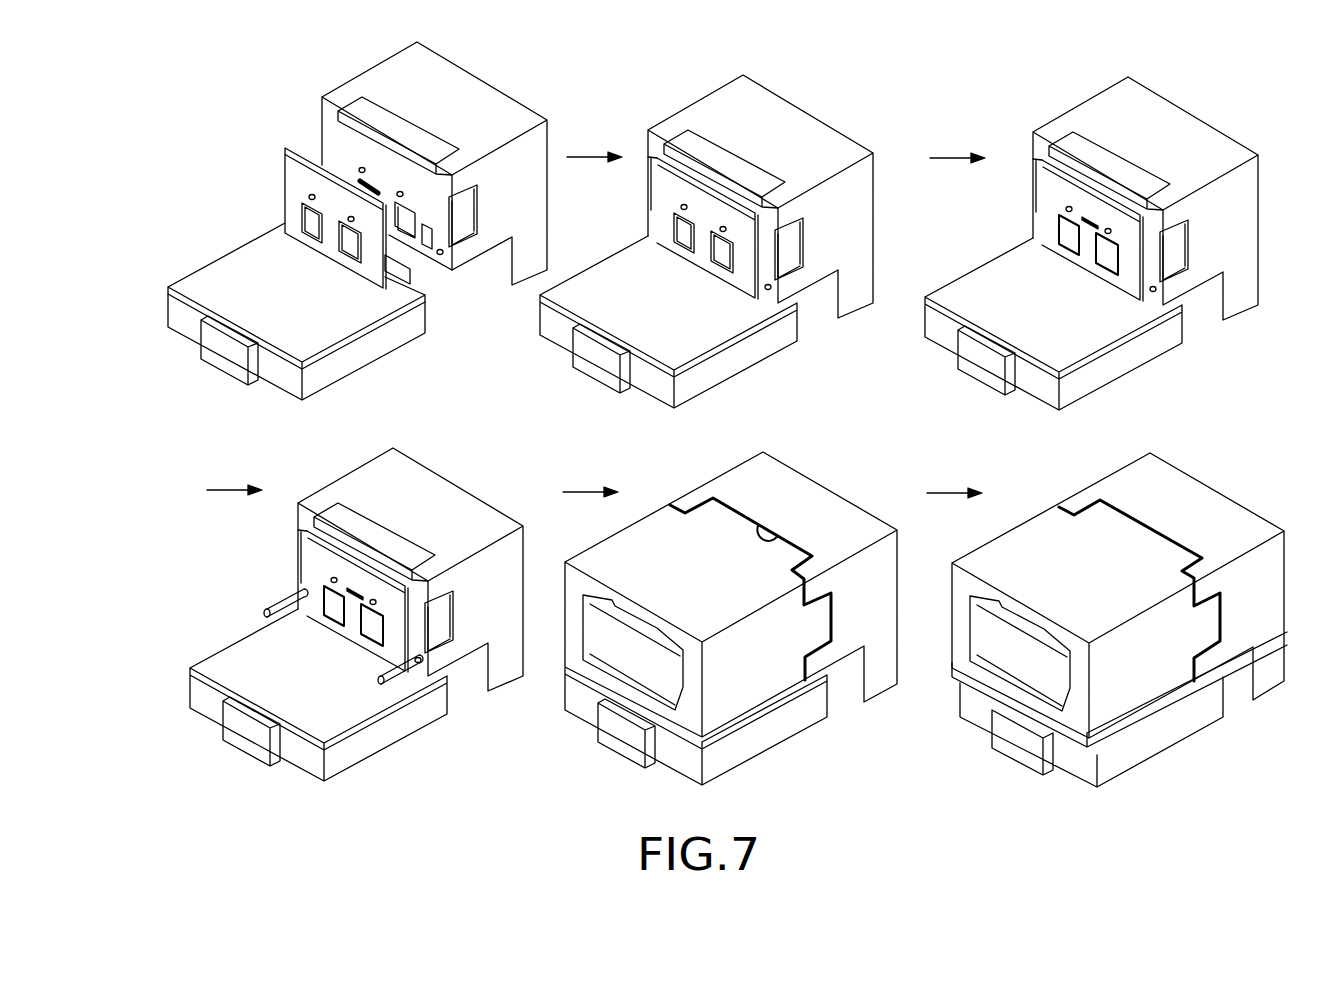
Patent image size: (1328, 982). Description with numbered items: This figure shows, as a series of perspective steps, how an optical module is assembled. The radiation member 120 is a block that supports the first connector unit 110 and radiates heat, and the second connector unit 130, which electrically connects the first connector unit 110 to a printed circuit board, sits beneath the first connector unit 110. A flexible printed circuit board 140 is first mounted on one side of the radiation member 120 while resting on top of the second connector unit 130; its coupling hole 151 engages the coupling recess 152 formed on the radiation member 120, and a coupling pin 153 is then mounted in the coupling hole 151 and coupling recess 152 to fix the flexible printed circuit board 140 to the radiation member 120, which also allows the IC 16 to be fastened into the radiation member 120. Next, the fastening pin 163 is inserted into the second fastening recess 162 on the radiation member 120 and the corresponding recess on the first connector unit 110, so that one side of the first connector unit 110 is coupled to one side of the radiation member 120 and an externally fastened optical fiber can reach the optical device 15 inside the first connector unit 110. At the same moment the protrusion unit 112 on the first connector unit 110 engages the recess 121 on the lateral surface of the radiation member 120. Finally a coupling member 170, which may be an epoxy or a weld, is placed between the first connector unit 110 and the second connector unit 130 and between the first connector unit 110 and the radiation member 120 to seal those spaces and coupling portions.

The first connector unit 110 is at (652, 525).
The protrusion unit 112 is at (758, 521).
The radiation member 120 is at (457, 77).
The recess 121 is at (478, 190).
The second connector unit 130 is at (176, 312).
The flexible printed circuit board 140 is at (208, 271).
The coupling hole 151 is at (309, 197).
The coupling recess 152 is at (359, 168).
The coupling pin 153 is at (1090, 216).
The optical device 15 is at (1062, 226).
The IC 16 is at (1066, 208).
The second fastening recess 162 is at (441, 256).
The fastening pin 163 is at (284, 604).
The coupling member 170 is at (1163, 702).